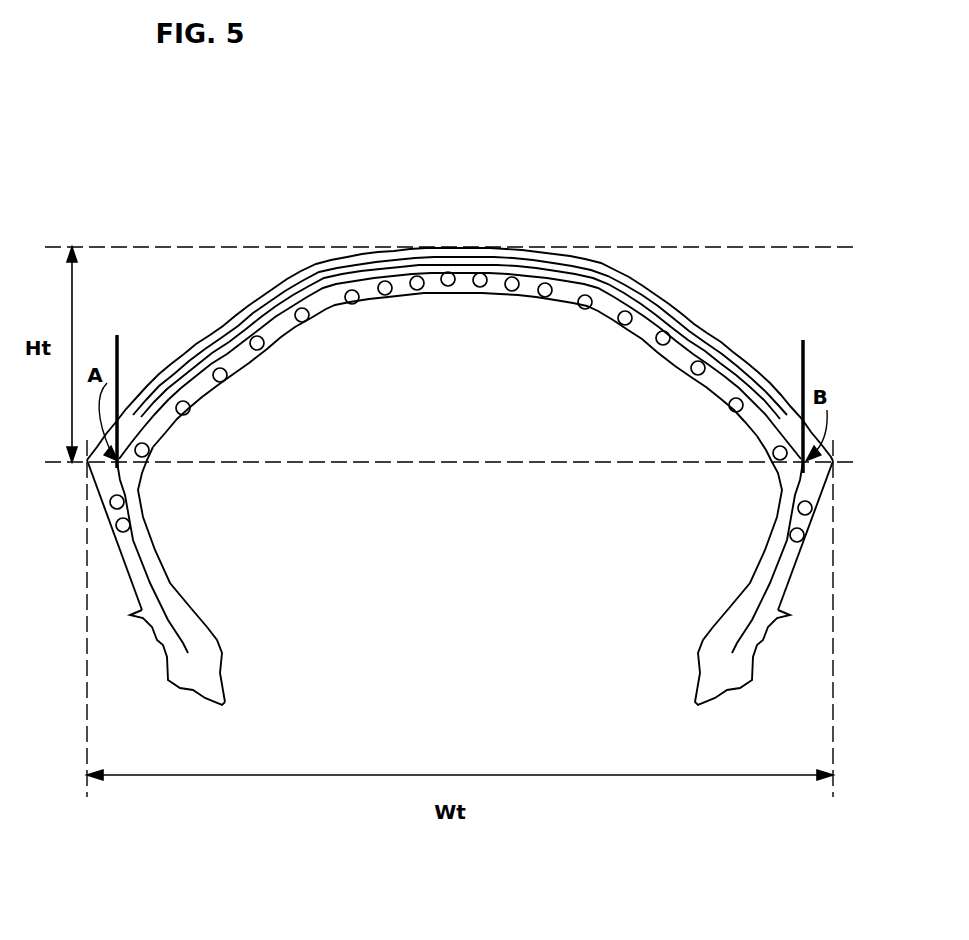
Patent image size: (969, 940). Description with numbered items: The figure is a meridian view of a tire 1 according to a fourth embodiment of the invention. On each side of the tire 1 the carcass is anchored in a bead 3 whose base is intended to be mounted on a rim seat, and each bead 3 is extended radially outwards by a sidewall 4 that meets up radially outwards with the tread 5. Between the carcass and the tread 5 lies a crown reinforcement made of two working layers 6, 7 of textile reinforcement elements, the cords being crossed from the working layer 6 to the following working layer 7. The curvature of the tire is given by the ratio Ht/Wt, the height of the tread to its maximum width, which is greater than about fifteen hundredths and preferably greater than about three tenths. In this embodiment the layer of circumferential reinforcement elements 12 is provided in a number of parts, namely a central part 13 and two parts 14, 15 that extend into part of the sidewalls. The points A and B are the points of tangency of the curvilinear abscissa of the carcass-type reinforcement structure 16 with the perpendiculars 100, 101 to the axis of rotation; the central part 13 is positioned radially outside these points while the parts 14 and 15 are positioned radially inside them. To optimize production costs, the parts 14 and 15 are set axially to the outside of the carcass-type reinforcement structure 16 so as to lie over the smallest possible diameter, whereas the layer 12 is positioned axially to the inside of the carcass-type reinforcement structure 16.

The tire 1 is at (567, 220).
The bead 3 is at (200, 653).
The sidewall 4 is at (125, 563).
The tread 5 is at (323, 262).
The working layer 6 is at (603, 285).
The working layer 7 is at (693, 327).
The layer of circumferential reinforcement elements 12 is at (355, 300).
The central part 13 is at (467, 290).
The part 14 is at (125, 490).
The part 15 is at (790, 512).
The carcass-type reinforcement structure 16 is at (158, 590).
The perpendicular to the axis of rotation 100 is at (118, 352).
The perpendicular to the axis of rotation 101 is at (806, 362).